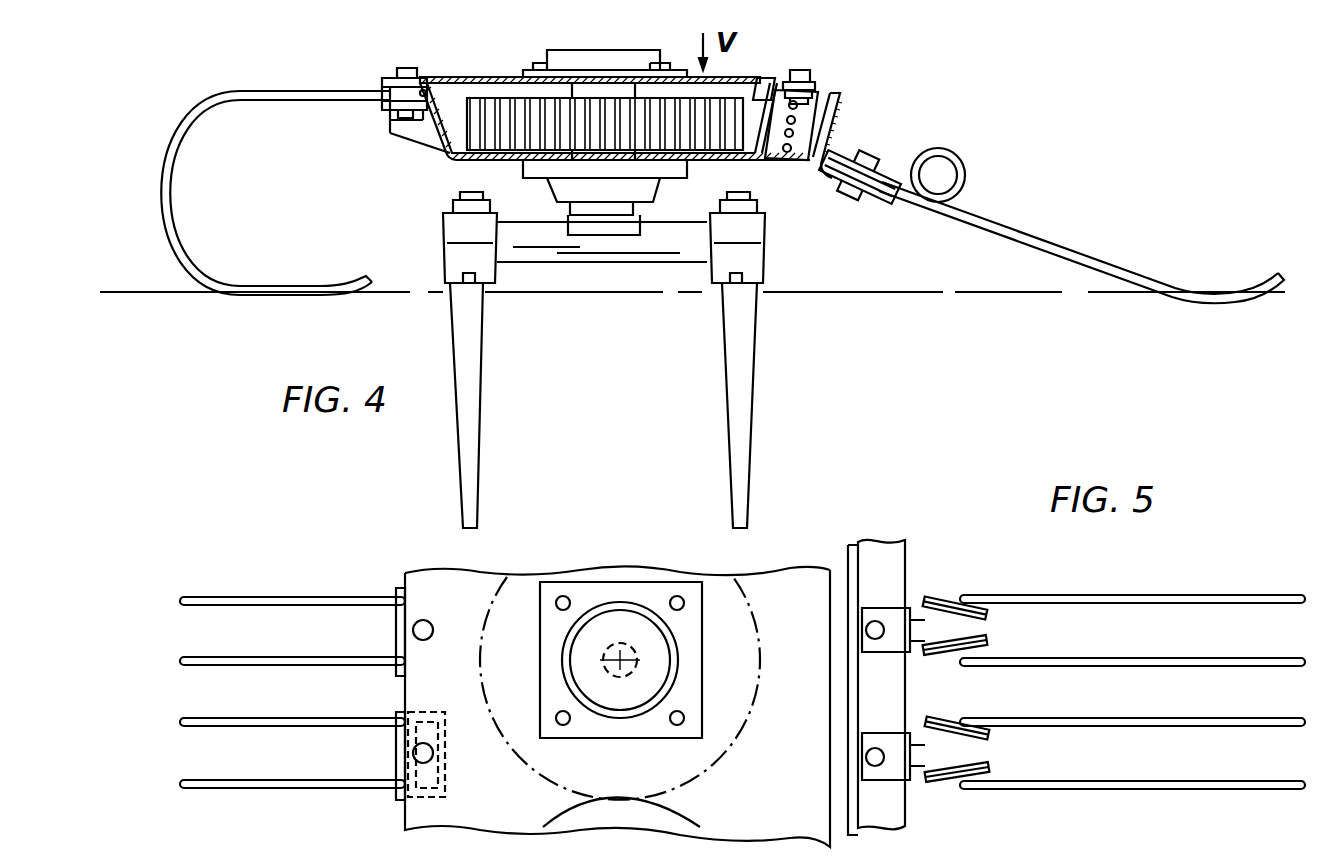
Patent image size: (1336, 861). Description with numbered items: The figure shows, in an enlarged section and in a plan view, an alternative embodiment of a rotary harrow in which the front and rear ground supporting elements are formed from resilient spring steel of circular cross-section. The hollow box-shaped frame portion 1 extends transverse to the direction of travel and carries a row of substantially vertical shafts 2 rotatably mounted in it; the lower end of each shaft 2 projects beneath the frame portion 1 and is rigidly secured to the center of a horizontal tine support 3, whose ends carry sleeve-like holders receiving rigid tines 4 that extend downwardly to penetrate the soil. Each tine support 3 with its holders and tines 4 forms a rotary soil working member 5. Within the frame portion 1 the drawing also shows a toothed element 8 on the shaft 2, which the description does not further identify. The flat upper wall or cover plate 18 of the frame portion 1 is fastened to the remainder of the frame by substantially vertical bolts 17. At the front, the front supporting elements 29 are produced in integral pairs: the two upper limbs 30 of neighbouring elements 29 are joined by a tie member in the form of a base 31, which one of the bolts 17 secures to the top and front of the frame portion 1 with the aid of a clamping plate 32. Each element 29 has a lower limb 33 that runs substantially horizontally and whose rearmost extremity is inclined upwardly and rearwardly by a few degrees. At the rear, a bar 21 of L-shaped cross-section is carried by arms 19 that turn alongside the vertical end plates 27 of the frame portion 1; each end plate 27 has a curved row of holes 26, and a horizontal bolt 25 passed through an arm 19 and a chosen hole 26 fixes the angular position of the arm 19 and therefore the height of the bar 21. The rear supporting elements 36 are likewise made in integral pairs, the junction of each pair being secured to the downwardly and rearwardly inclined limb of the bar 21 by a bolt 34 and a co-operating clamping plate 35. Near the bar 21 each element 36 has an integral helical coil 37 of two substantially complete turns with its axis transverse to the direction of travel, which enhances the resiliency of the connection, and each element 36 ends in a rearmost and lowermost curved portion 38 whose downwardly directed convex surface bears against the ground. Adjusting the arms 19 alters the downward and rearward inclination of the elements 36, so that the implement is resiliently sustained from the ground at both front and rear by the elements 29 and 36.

In FIG. 4, the hollow box-shaped frame portion 1 is at (444, 70).
In FIG. 5, the hollow box-shaped frame portion 1 is at (521, 565).
In FIG. 4, the shaft 2 is at (607, 83).
In FIG. 5, the shaft 2 is at (560, 664).
In FIG. 4, the tine support 3 is at (545, 243).
In FIG. 4, the tine 4 is at (470, 442).
In FIG. 4, the rotary soil working member 5 is at (612, 363).
In FIG. 4, the rotor 8 is at (493, 137).
In FIG. 5, the rotor 8 is at (768, 647).
In FIG. 4, the bolt 17 is at (408, 46).
In FIG. 5, the bolt 17 is at (465, 622).
In FIG. 4, the upper wall or cover plate 18 is at (513, 60).
In FIG. 5, the upper wall or cover plate 18 is at (648, 570).
In FIG. 4, the arm 19 is at (823, 97).
In FIG. 4, the bar 21 is at (838, 100).
In FIG. 5, the bar 21 is at (872, 540).
In FIG. 4, the bolt 25 is at (762, 98).
In FIG. 4, the holes 26 is at (793, 133).
In FIG. 4, the end plate 27 is at (423, 137).
In FIG. 4, the front supporting element 29 is at (175, 202).
In FIG. 5, the front supporting element 29 is at (283, 572).
In FIG. 4, the upper limb 30 is at (303, 80).
In FIG. 5, the upper limb 30 is at (313, 680).
In FIG. 4, the base 31 is at (392, 128).
In FIG. 5, the base 31 is at (472, 712).
In FIG. 4, the clamping plate 32 is at (380, 105).
In FIG. 5, the clamping plate 32 is at (397, 748).
In FIG. 4, the lower limb 33 is at (307, 265).
In FIG. 4, the bolt 34 is at (863, 153).
In FIG. 5, the bolt 34 is at (866, 757).
In FIG. 4, the clamping plate 35 is at (880, 172).
In FIG. 5, the clamping plate 35 is at (893, 733).
In FIG. 4, the rear supporting element 36 is at (1072, 240).
In FIG. 5, the rear supporting element 36 is at (1152, 796).
In FIG. 4, the helical coil 37 is at (965, 154).
In FIG. 5, the helical coil 37 is at (990, 638).
In FIG. 4, the curved portion 38 is at (1203, 288).
In FIG. 5, the curved portion 38 is at (1218, 683).